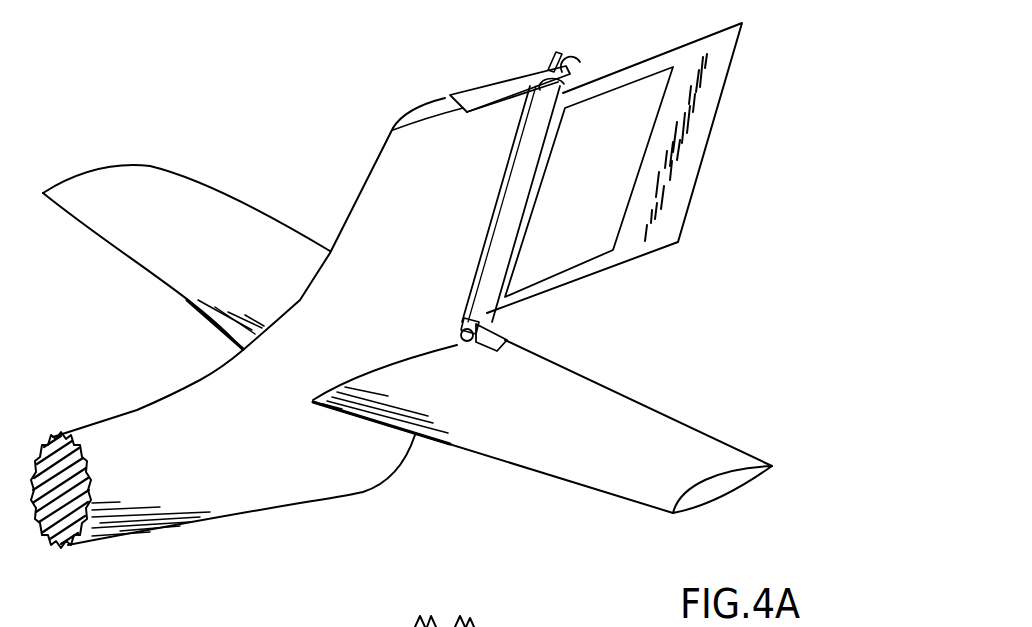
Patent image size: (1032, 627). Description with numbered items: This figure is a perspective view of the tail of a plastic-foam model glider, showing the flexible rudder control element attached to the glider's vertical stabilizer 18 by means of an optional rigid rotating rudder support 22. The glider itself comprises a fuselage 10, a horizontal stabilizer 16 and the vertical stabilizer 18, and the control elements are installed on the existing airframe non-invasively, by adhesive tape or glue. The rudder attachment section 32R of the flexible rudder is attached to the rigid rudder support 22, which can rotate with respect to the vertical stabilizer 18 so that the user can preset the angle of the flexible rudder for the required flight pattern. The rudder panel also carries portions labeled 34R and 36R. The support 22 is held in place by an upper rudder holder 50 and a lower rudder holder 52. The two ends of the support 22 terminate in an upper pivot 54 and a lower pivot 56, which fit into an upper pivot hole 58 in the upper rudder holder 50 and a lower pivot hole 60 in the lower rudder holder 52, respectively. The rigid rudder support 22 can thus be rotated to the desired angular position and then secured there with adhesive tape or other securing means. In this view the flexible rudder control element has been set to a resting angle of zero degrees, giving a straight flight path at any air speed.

The fuselage 10 is at (135, 410).
The horizontal stabilizer 16 is at (190, 180).
The vertical stabilizer 18 is at (355, 205).
The rigid rotating rudder support 22 is at (543, 150).
The rudder attachment section 32R is at (533, 202).
The right rudder panel edge 34R is at (628, 62).
The right rudder panel hinged portion 36R is at (718, 128).
The upper rudder holder 50 is at (467, 88).
The lower rudder holder 52 is at (507, 340).
The upper pivot 54 is at (560, 52).
The lower pivot 56 is at (458, 320).
The upper pivot hole 58 is at (548, 70).
The lower pivot hole 60 is at (455, 338).